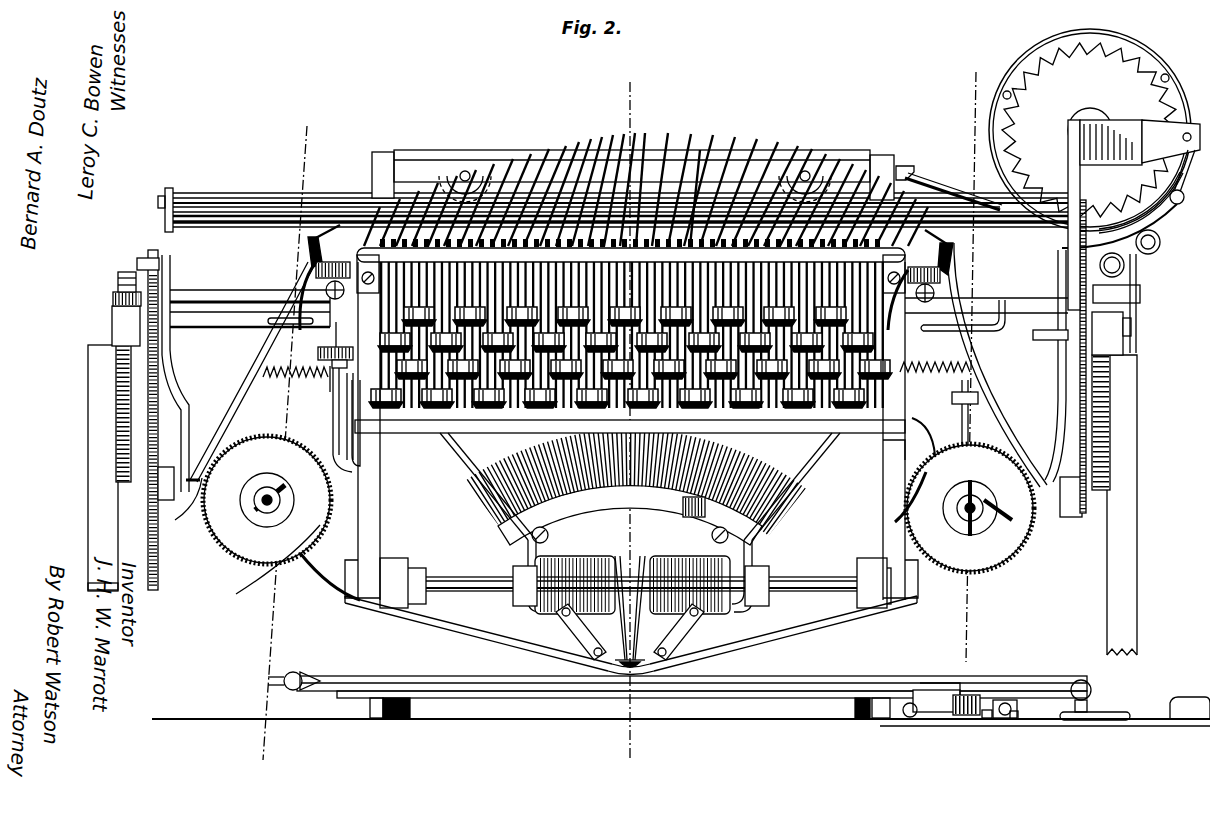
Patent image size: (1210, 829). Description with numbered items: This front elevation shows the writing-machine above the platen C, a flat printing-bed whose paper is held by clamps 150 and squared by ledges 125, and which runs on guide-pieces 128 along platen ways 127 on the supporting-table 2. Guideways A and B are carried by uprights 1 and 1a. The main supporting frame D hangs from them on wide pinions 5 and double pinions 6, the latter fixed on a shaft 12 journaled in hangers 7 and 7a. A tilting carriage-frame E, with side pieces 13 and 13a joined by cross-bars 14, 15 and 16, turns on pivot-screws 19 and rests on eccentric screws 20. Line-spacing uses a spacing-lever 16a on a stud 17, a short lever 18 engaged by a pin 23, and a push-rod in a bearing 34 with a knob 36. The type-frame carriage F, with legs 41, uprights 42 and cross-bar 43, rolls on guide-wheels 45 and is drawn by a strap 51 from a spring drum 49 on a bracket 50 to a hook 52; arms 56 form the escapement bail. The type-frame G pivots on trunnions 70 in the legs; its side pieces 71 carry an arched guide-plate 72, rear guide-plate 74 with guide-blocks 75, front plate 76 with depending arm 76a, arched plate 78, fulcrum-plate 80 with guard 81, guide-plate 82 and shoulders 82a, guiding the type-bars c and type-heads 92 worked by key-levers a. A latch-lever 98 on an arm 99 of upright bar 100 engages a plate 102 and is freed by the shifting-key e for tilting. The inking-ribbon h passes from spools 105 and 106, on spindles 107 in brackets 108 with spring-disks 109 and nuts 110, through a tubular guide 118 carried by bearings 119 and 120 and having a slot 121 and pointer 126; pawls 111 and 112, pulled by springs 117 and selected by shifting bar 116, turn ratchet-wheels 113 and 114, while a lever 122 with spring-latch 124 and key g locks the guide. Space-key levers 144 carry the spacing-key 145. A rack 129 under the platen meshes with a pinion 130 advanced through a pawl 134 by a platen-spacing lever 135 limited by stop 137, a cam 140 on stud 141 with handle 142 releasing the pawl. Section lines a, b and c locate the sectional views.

The standard or upright 1 is at (90, 497).
The standard or upright 1a is at (1137, 543).
The supporting-table 2 is at (218, 719).
The wide pinion 5 is at (113, 297).
The double pinion 6 is at (118, 276).
The hanger 7 is at (148, 358).
The hanger 7a is at (1113, 377).
The pinion-shaft 12 is at (262, 312).
The side piece 13 is at (180, 400).
The side piece 13a is at (1058, 380).
The cross-bar 14 is at (180, 520).
The cross-bar 15 is at (322, 193).
The cross-bar 16 is at (192, 312).
The spacing-lever 16a is at (1138, 276).
The stud 17 is at (1140, 295).
The short lever 18 is at (1131, 323).
The pivot-screw 19 is at (163, 505).
The eccentric screw 20 is at (140, 260).
The pin 23 is at (1123, 343).
The bearing 34 is at (1120, 232).
The knob 36 is at (1160, 246).
The leg 41 is at (382, 490).
The upright 42 is at (380, 158).
The cross-bar 43 is at (703, 150).
The grooved guide-wheel 45 is at (466, 150).
The spring-actuated drum 49 is at (1067, 40).
The bracket 50 is at (1082, 184).
The strap 51 is at (940, 188).
The hook 52 is at (905, 166).
The arm 56 is at (372, 545).
The trunnion 70 is at (460, 577).
The side piece 71 is at (482, 486).
The lower arched guide-plate 72 is at (745, 535).
The flat guide-plate 74 is at (520, 608).
The guide-block 75 is at (572, 630).
The plate 76 is at (632, 567).
The depending arm 76a is at (610, 612).
The arched plate 78 is at (332, 368).
The fulcrum-plate 80 is at (312, 252).
The guard 81 is at (528, 160).
The guide-plate 82 is at (575, 165).
The pin or shoulder 82a is at (1012, 265).
The type-head 92 is at (694, 518).
The latch-lever 98 is at (265, 368).
The arm 99 is at (328, 390).
The upright bar 100 is at (267, 570).
The plate 102 is at (349, 410).
The ribbon-spool 105 is at (267, 500).
The ribbon-spool 106 is at (945, 492).
The spindle 107 is at (280, 488).
The bracket 108 is at (325, 580).
The spring-disk 109 is at (258, 478).
The adjustable nut 110 is at (282, 503).
The pawl 111 is at (250, 385).
The pawl 112 is at (990, 398).
The ratchet-wheel 113 is at (225, 548).
The ratchet-wheel 114 is at (1022, 545).
The ribbon-shifting bar 116 is at (978, 322).
The spring 117 is at (300, 372).
The ribbon-guide 118 is at (805, 628).
The bearing 119 is at (395, 600).
The bearing 120 is at (875, 600).
The slot 121 is at (622, 668).
The lever 122 is at (892, 518).
The spring-latch 124 is at (885, 445).
The ledge or guide 125 is at (962, 684).
The pointer or indicator 126 is at (640, 668).
The platen guide-rail 127 is at (398, 712).
The guide-piece 128 is at (375, 708).
The rack 129 is at (935, 695).
The pinion 130 is at (980, 698).
The pawl 134 is at (985, 716).
The platen-spacing lever 135 is at (1188, 697).
The adjustable stop 137 is at (1080, 720).
The cam 140 is at (1015, 718).
The stud 141 is at (1010, 702).
The handle 142 is at (1092, 694).
The space-key lever 144 is at (265, 262).
The spacing-key 145 is at (412, 433).
The clamp 150 is at (293, 672).
The rail or guideway A is at (118, 326).
The rail or guideway B is at (1140, 360).
The platen C is at (692, 673).
The main supporting frame or carriage D is at (116, 422).
The tilting carriage-frame E is at (298, 183).
The type-frame carriage F is at (838, 158).
The type-frame G is at (630, 516).
The type-key lever a is at (670, 108).
The section line b is at (284, 443).
The type-bar c is at (848, 357).
The shifting-key e is at (318, 350).
The key g is at (935, 357).
The inking-ribbon h is at (345, 598).